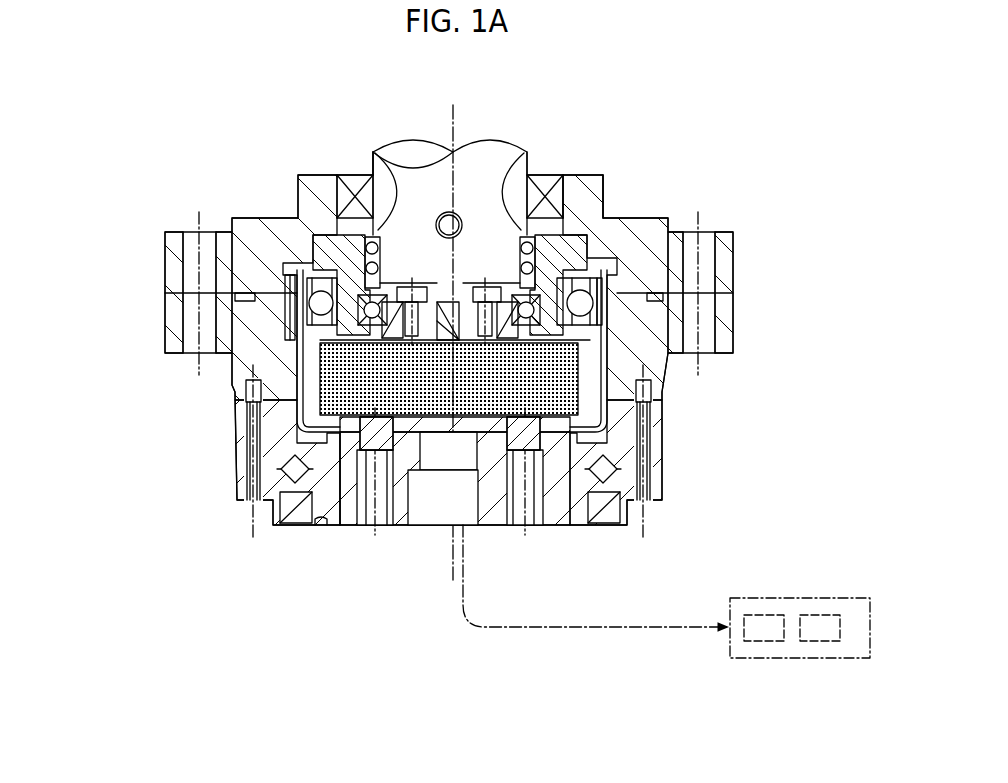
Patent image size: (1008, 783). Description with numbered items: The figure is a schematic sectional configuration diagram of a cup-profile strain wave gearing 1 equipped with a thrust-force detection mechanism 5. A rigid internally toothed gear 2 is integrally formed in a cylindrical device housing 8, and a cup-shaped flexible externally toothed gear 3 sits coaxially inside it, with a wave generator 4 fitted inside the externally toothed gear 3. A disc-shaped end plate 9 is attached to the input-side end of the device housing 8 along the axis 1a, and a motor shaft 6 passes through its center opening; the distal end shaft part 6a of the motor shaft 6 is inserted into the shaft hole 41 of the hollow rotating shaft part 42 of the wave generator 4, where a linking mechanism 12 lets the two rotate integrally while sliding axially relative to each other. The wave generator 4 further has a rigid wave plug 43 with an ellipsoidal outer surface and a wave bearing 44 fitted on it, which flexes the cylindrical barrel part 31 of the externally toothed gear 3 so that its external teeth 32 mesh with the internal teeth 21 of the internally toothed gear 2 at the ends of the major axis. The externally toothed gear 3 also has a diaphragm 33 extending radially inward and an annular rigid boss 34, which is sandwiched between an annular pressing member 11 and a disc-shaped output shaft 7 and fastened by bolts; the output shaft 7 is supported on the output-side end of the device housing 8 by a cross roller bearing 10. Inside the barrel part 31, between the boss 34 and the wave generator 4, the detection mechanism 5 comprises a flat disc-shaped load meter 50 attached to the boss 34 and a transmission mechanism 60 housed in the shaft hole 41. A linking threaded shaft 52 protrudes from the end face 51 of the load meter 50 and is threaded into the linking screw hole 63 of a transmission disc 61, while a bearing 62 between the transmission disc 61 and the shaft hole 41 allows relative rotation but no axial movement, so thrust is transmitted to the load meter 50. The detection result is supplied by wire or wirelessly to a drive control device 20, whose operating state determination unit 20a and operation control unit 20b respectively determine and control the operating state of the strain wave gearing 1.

The cup-profile strain wave gearing 1 is at (582, 146).
The axis 1a is at (446, 110).
The rigid internally toothed gear 2 is at (278, 318).
The cup-shaped flexible externally toothed gear 3 is at (282, 380).
The wave generator 4 is at (268, 232).
The detection mechanism 5 is at (316, 418).
The motor shaft 6 is at (358, 160).
The distal end shaft part 6a is at (530, 272).
The output shaft 7 is at (342, 532).
The device housing 8 is at (224, 366).
The end plate 9 is at (232, 216).
The cross roller bearing 10 is at (258, 480).
The annular pressing member 11 is at (333, 442).
The linking mechanism 12 is at (384, 262).
The drive control device 20 is at (795, 592).
The operating state determination unit 20a is at (765, 648).
The operation control unit 20b is at (820, 648).
The internal teeth 21 is at (286, 297).
The cylindrical barrel part 31 is at (292, 392).
The external teeth 32 is at (300, 330).
The diaphragm 33 is at (300, 510).
The annular rigid boss 34 is at (357, 528).
The shaft hole 41 is at (380, 152).
The rotating shaft part 42 is at (392, 300).
The rigid wave plug 43 is at (360, 296).
The wave bearing 44 is at (330, 300).
The load meter 50 is at (586, 391).
The end face 51 is at (690, 330).
The linking threaded shaft 52 is at (441, 288).
The transmission mechanism 60 is at (608, 343).
The transmission disc 61 is at (496, 300).
The bearing 62 is at (532, 300).
The linking screw hole 63 is at (466, 298).